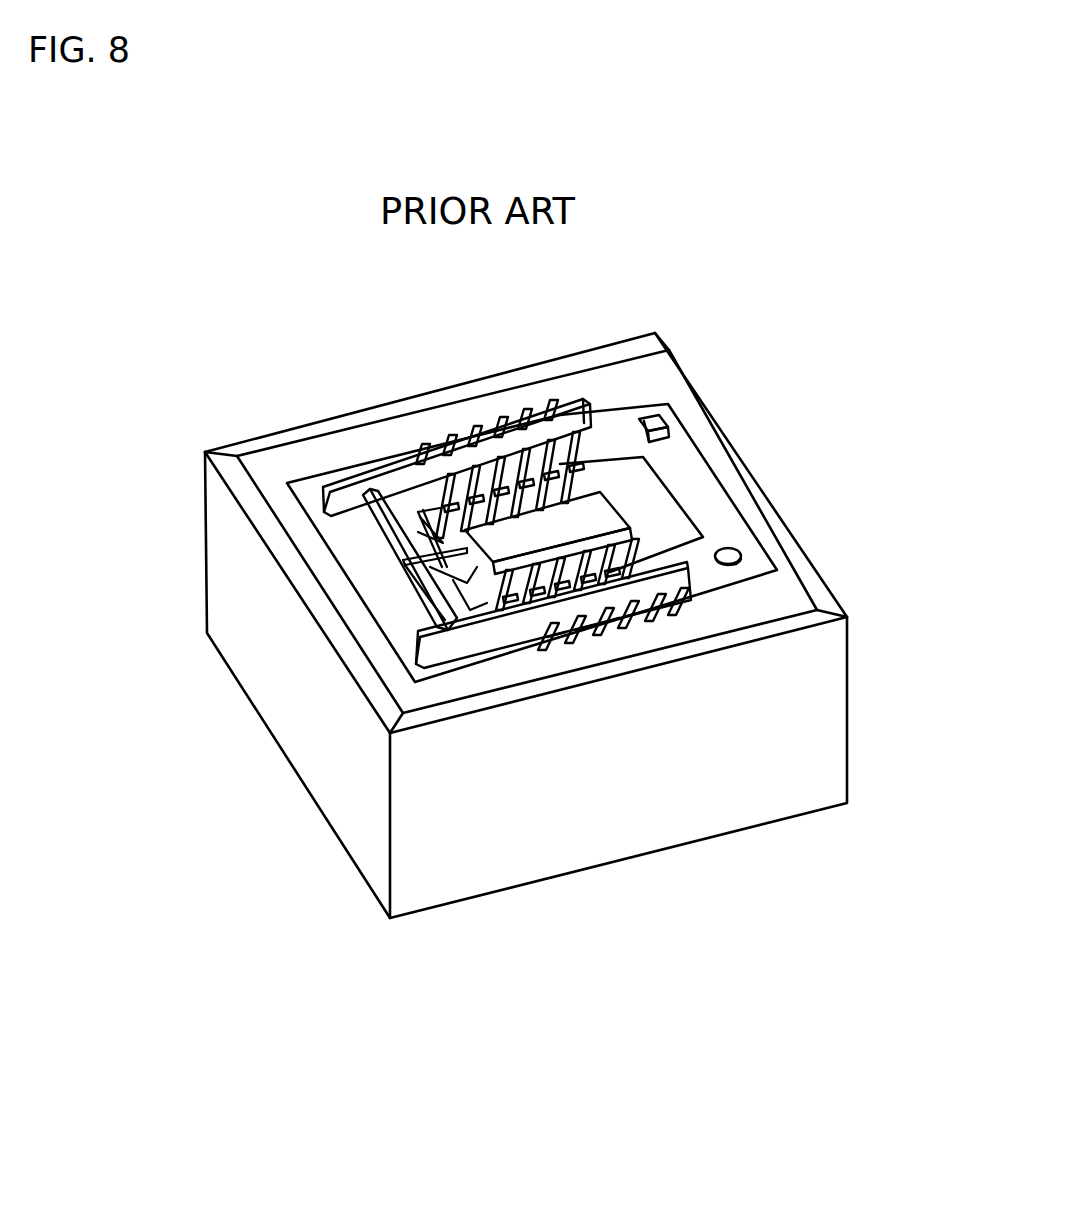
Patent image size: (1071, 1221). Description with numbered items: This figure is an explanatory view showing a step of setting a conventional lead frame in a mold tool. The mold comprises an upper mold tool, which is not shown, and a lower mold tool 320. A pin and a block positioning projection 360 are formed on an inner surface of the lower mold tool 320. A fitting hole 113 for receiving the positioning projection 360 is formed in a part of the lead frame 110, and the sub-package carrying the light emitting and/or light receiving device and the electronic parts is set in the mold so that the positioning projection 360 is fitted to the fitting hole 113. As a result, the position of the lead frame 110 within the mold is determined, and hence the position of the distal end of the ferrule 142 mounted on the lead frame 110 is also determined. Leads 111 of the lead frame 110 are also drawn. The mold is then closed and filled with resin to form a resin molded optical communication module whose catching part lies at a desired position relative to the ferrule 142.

The lead frame 110 is at (715, 515).
The lead pins 111 is at (577, 643).
The fitting hole 113 is at (663, 447).
The ferrule 142 is at (405, 558).
The lower mold tool 320 is at (717, 823).
The positioning projection 360 is at (658, 425).